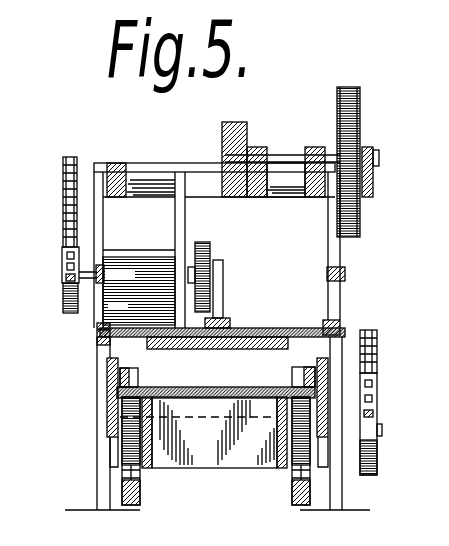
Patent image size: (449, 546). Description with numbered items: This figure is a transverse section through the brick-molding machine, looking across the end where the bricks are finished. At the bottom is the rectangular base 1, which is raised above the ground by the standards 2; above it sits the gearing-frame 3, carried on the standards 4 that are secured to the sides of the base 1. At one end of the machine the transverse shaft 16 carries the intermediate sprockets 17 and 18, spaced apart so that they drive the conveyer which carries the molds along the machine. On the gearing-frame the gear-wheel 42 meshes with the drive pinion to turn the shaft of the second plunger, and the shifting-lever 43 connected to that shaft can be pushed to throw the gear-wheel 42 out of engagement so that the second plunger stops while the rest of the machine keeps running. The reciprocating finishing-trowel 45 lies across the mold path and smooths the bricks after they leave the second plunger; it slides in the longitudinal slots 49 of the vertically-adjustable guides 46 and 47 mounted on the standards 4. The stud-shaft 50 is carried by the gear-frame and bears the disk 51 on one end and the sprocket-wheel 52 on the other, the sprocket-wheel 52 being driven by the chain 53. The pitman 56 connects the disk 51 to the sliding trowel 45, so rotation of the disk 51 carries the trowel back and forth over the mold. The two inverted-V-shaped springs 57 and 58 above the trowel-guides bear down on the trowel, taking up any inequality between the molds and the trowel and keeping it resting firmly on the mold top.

The base 1 is at (107, 408).
The standards 2 is at (97, 490).
The gearing-frame 3 is at (118, 164).
The standards 4 is at (98, 218).
The transverse shaft 16 is at (382, 423).
The sprocket 17 is at (122, 452).
The sprocket 18 is at (292, 472).
The gear-wheel 42 is at (362, 122).
The shifting-lever 43 is at (375, 187).
The reciprocating finishing-trowel 45 is at (240, 349).
The vertically-adjustable guide 46 is at (97, 342).
The vertically-adjustable guide 47 is at (343, 325).
The longitudinal slots 49 is at (110, 339).
The stud-shaft 50 is at (63, 287).
The disk 51 is at (208, 245).
The sprocket-wheel 52 is at (62, 258).
The chain 53 is at (63, 190).
The pitman 56 is at (222, 293).
The inverted-V-shaped spring 57 is at (97, 324).
The inverted-V-shaped spring 58 is at (342, 298).